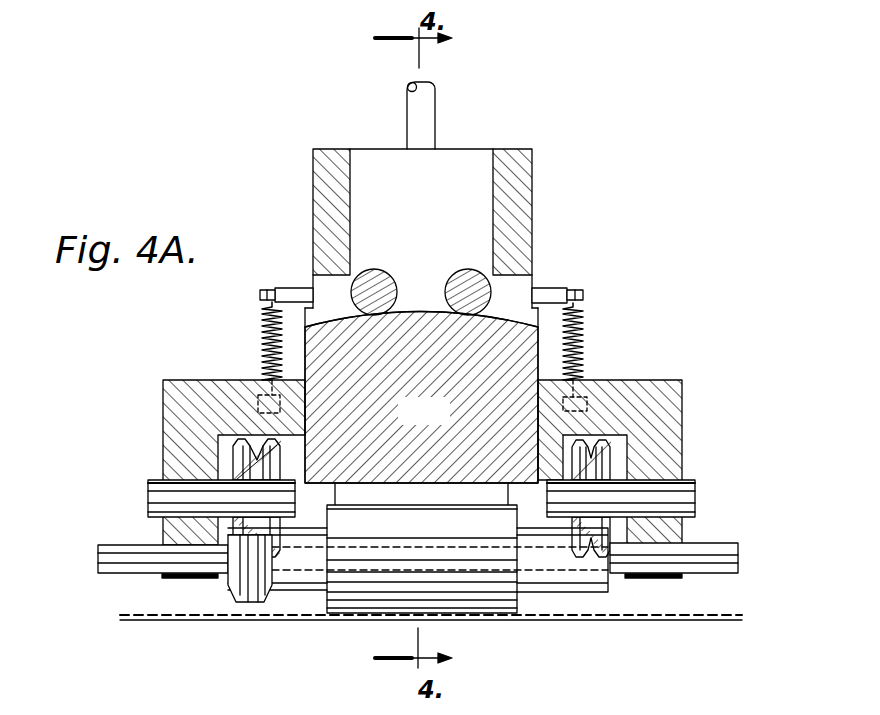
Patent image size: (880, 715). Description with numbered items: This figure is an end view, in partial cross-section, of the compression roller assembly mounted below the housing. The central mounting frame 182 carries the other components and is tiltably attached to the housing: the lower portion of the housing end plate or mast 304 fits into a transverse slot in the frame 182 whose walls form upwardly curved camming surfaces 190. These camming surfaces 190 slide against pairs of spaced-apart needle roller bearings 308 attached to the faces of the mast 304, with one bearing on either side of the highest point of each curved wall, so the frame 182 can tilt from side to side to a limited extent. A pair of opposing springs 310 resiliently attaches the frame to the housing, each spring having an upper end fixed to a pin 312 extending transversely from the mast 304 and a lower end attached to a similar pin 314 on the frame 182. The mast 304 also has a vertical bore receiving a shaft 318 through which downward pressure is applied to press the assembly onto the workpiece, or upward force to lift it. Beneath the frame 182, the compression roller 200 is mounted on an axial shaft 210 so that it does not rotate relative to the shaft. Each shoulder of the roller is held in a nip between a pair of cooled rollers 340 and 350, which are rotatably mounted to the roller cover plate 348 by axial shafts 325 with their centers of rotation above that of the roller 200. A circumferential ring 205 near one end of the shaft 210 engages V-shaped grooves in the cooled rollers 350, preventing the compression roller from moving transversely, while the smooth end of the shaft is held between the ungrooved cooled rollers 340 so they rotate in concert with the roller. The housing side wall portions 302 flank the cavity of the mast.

The central mounting frame 182 is at (444, 422).
The upwardly curved camming surfaces 190 is at (423, 312).
The compression roller 200 is at (367, 587).
The circumferential ring 205 is at (247, 598).
The axial shaft 210 is at (137, 553).
The housing wall 302 is at (313, 180).
The end plate or mast 304 is at (441, 229).
The needle roller bearings 308 is at (379, 290).
The opposing springs 310 is at (262, 335).
The pin 312 is at (290, 288).
The pin 314 is at (243, 407).
The shaft 318 is at (427, 110).
The axial shafts 325 is at (150, 498).
The cooled rollers 340 is at (597, 450).
The roller cover plate 348 is at (682, 428).
The cooled rollers 350 is at (247, 440).